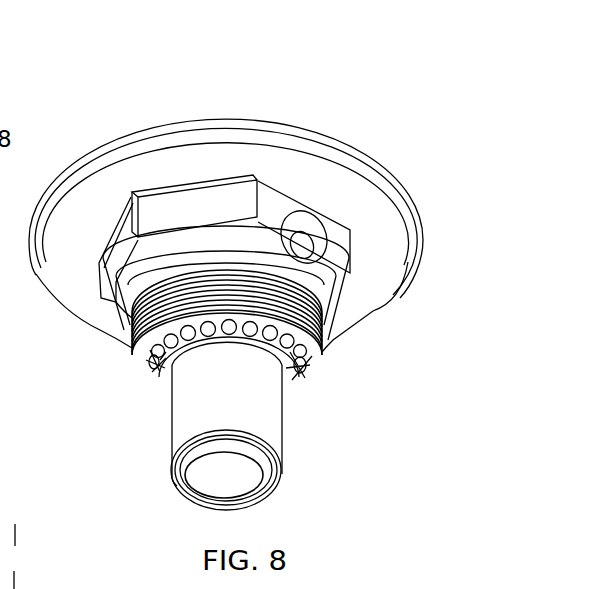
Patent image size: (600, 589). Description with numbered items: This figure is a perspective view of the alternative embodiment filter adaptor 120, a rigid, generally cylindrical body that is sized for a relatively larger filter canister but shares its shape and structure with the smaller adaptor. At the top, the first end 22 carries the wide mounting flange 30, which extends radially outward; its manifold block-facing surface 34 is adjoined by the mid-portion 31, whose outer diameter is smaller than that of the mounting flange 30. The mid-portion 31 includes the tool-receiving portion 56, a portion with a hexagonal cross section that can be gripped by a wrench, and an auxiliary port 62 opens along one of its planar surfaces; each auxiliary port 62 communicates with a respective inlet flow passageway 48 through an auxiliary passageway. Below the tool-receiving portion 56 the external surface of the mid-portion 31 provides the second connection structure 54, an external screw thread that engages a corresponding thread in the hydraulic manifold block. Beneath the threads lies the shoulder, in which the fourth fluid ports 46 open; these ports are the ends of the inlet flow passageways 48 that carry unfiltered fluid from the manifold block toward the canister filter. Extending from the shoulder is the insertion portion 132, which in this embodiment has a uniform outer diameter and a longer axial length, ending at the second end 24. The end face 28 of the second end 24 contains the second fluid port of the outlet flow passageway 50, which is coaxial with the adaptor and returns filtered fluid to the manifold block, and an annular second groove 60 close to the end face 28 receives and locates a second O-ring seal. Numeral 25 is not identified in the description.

The filter adaptor 120 is at (156, 44).
The first end 22 is at (378, 162).
The second end 24 is at (283, 469).
The sleeve 25 is at (273, 347).
The end face 28 is at (258, 501).
The mounting flange 30 is at (400, 264).
The manifold block-facing surface 34 is at (277, 215).
The mid-portion 31 is at (345, 325).
The fourth fluid ports 46 is at (160, 351).
The inlet flow passageways 48 is at (160, 365).
The outlet flow passageway 50 is at (212, 481).
The second connection structure 54 is at (135, 310).
The tool-receiving portion 56 is at (187, 202).
The second groove 60 is at (245, 439).
The auxiliary ports 62 is at (300, 240).
The insertion portion 132 is at (160, 437).